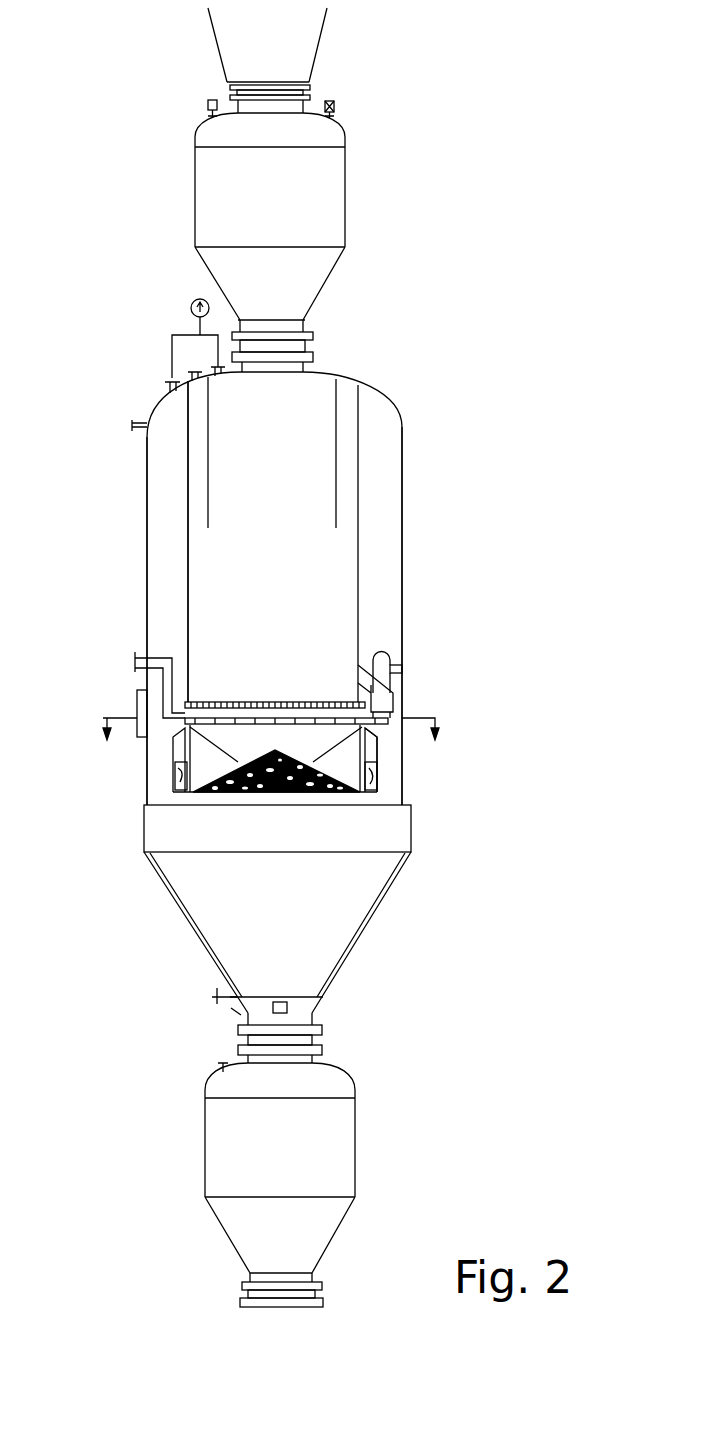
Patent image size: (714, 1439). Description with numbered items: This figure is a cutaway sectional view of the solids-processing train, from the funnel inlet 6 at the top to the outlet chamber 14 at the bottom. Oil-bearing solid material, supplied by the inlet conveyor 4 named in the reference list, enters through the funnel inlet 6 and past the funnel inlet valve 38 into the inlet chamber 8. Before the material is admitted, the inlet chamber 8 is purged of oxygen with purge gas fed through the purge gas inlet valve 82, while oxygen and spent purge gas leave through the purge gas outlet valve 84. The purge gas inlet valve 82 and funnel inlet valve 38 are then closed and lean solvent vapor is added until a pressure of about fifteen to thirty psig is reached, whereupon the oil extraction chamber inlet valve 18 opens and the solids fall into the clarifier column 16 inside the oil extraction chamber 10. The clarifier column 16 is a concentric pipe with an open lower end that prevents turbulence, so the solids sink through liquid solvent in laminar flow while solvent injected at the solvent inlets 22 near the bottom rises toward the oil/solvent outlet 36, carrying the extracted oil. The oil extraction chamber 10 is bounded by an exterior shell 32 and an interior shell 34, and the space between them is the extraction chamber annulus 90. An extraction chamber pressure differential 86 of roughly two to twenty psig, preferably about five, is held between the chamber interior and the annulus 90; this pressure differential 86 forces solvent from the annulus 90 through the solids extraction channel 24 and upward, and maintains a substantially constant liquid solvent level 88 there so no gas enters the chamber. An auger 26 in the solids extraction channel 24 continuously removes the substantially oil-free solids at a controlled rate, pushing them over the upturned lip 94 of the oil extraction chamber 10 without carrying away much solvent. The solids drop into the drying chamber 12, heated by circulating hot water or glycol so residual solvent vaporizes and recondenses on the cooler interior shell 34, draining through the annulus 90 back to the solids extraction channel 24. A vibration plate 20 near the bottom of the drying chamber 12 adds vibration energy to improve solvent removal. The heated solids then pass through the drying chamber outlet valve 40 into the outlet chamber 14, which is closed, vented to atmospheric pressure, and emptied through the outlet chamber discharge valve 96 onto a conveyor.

The funnel inlet 6 is at (328, 14).
The funnel inlet valve 38 is at (310, 90).
The purge gas outlet valve 84 is at (206, 104).
The purge gas inlet valve 82 is at (335, 103).
The inlet chamber 8 is at (345, 198).
The oil extraction chamber inlet valve 18 is at (313, 347).
The extraction chamber pressure differential 86 is at (191, 301).
The oil/solvent outlet 36 is at (193, 373).
The clarifier column 16 is at (337, 405).
The oil extraction chamber 10 is at (428, 457).
The extraction chamber exterior shell 32 is at (147, 466).
The extraction chamber interior shell 34 is at (187, 525).
The extraction chamber annulus 90 is at (388, 536).
The solvent inlet 22 is at (402, 668).
The solids extraction channel 24 is at (378, 752).
The inlet conveyor 4 is at (274, 713).
The upturned lip 94 is at (372, 771).
The auger 26 is at (173, 770).
The constant liquid solvent level 88 is at (182, 787).
The drying chamber 12 is at (375, 913).
The vibration plate 20 is at (318, 1009).
The drying chamber outlet valve 40 is at (323, 1038).
The outlet chamber 14 is at (355, 1140).
The outlet chamber discharge valve 96 is at (323, 1291).